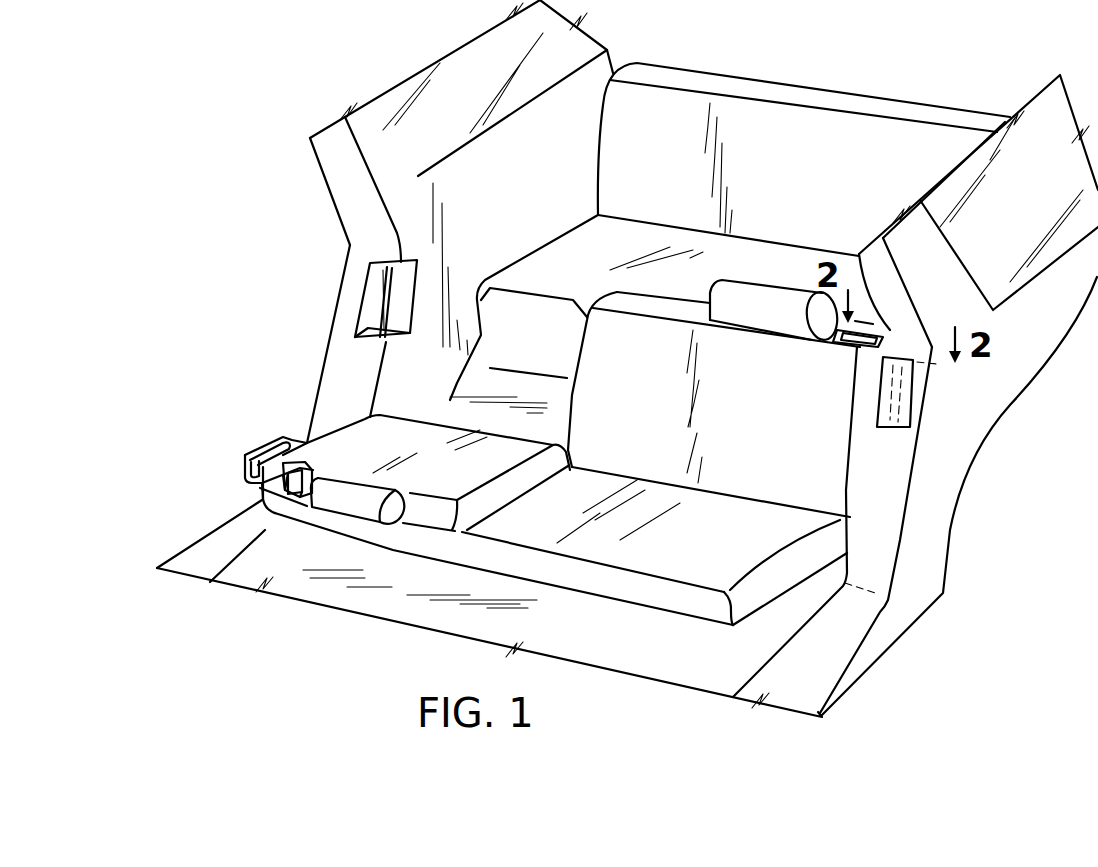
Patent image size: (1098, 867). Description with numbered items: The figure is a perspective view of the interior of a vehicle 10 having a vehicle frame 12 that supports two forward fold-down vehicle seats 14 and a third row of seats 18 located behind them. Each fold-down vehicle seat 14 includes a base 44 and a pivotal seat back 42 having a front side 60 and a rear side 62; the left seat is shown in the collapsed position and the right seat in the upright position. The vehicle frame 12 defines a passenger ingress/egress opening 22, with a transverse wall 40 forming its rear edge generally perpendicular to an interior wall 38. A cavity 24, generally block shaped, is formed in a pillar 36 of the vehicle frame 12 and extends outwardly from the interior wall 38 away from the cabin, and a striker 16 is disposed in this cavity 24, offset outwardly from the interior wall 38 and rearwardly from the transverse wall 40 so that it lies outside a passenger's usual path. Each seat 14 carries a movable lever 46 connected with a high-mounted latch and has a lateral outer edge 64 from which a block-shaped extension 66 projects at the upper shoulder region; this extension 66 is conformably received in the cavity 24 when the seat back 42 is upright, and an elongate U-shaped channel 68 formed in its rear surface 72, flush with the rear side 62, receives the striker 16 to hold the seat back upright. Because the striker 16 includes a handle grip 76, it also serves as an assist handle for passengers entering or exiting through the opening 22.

The vehicle 10 is at (230, 181).
The vehicle frame 12 is at (333, 210).
The vehicle seat 14 is at (345, 557).
The striker 16 is at (377, 300).
The third row of seats 18 is at (793, 108).
The passenger ingress/egress opening 22 is at (243, 388).
The cavity 24 is at (372, 278).
The pillar 36 is at (357, 227).
The interior wall 38 is at (576, 314).
The transverse wall 40 is at (340, 373).
The pivotal seat back 42 is at (657, 440).
The base 44 is at (390, 540).
The movable lever 46 is at (290, 488).
The front side 60 is at (745, 405).
The rear side 62 is at (392, 432).
The lateral outer edge 64 is at (860, 467).
The extension 66 is at (245, 470).
The elongate channel 68 is at (255, 455).
The rear surface 72 is at (273, 440).
The handle grip 76 is at (397, 287).